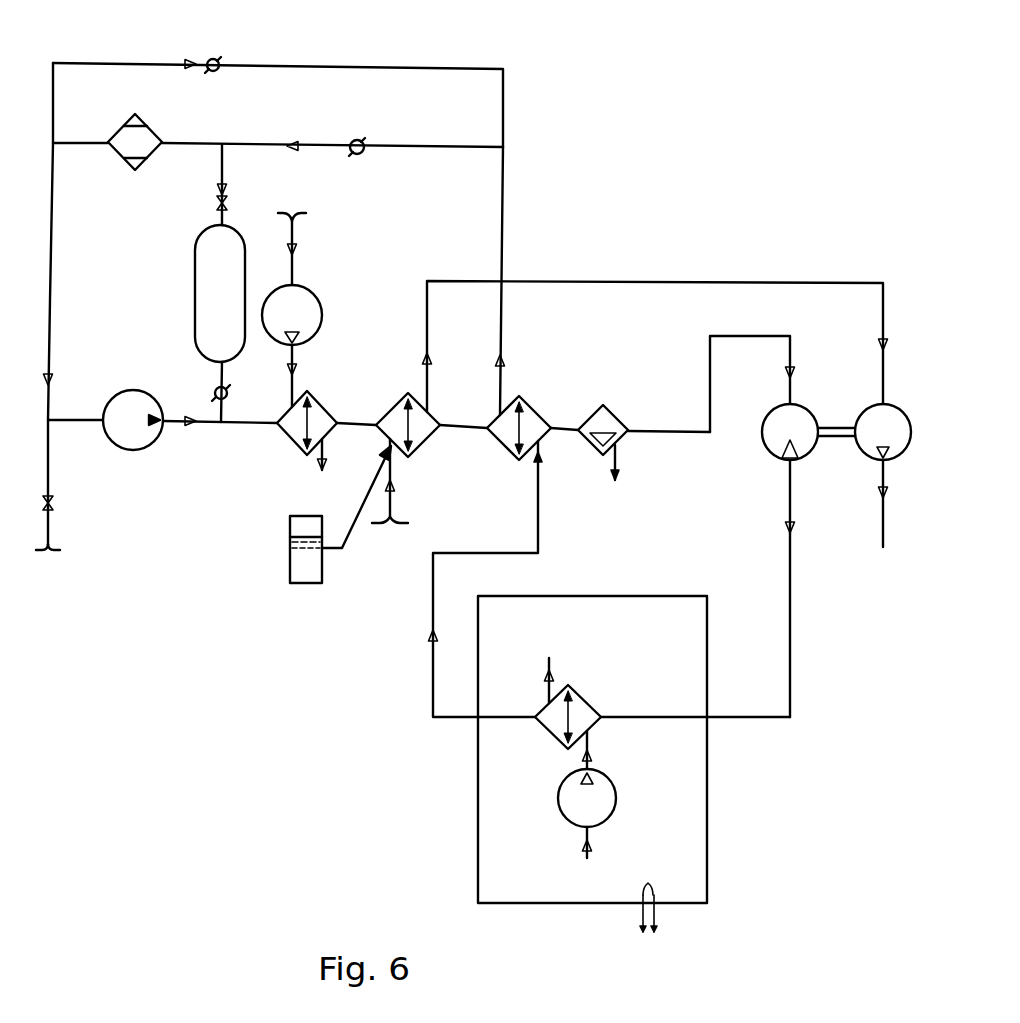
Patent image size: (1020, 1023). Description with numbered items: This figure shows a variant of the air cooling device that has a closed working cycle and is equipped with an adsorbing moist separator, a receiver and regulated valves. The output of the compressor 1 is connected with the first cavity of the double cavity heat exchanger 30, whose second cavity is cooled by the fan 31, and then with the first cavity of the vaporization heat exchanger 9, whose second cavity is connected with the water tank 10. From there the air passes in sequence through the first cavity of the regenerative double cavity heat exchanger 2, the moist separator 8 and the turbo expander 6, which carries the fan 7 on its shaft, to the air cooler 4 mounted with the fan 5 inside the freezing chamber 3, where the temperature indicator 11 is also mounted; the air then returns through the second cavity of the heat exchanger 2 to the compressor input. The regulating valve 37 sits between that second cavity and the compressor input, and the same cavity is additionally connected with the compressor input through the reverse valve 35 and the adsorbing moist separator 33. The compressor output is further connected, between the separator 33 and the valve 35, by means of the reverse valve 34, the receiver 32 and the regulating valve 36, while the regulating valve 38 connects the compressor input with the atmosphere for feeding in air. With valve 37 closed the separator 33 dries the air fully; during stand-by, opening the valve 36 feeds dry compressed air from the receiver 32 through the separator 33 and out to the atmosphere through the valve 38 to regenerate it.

The compressor 1 is at (118, 405).
The regenerative double cavity heat exchanger 2 is at (533, 420).
The freezing chamber 3 is at (492, 758).
The air cooler 4 is at (582, 707).
The fan 5 is at (605, 793).
The turbo expander 6 is at (806, 417).
The fan 7 is at (893, 420).
The moist separator 8 is at (605, 417).
The double cavity vaporization heat exchanger 9 is at (420, 428).
The water tank 10 is at (292, 563).
The temperature indicator 11 is at (655, 915).
The double cavity heat exchanger 30 is at (317, 418).
The fan 31 is at (322, 323).
The receiver 32 is at (210, 252).
The adsorbing moist separator 33 is at (122, 127).
The reverse valve 34 is at (210, 392).
The reverse valve 35 is at (358, 137).
The regulating valve 36 is at (222, 212).
The regulating valve 37 is at (213, 60).
The regulating valve 38 is at (55, 513).